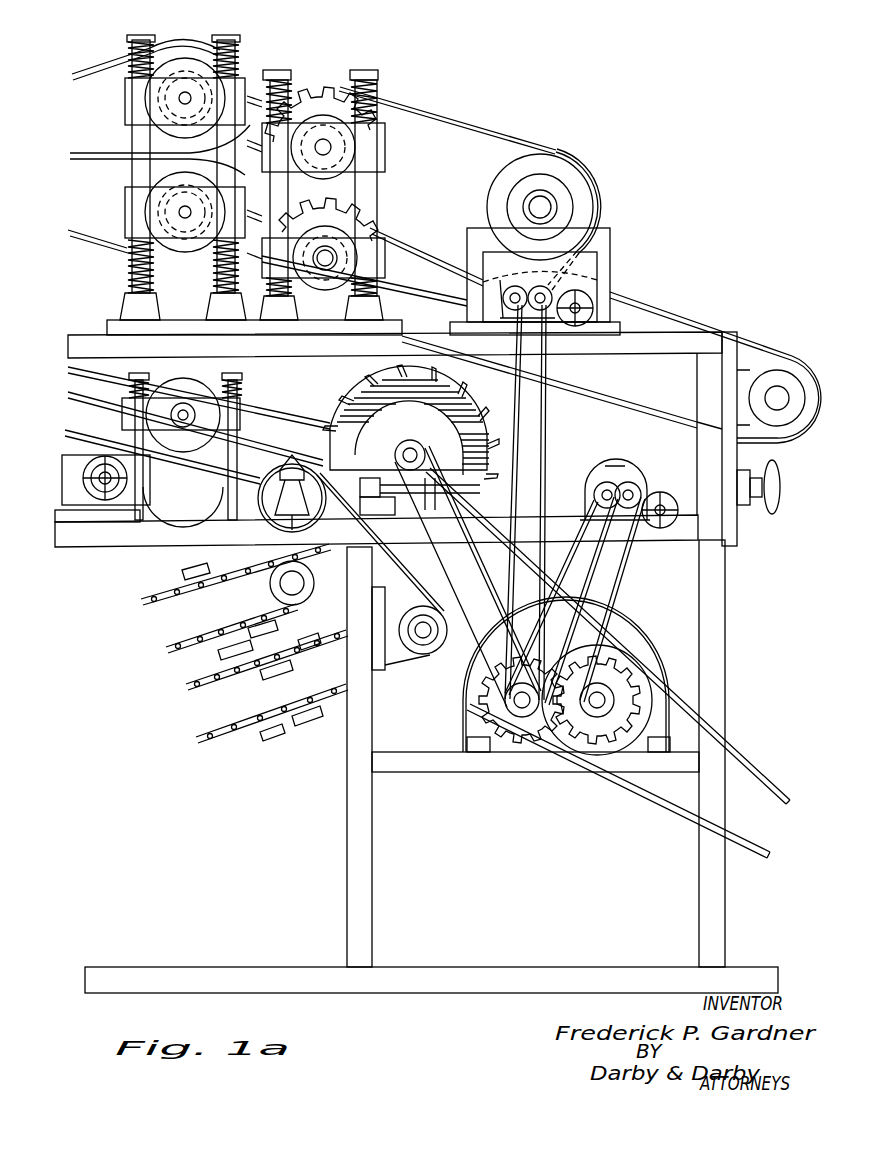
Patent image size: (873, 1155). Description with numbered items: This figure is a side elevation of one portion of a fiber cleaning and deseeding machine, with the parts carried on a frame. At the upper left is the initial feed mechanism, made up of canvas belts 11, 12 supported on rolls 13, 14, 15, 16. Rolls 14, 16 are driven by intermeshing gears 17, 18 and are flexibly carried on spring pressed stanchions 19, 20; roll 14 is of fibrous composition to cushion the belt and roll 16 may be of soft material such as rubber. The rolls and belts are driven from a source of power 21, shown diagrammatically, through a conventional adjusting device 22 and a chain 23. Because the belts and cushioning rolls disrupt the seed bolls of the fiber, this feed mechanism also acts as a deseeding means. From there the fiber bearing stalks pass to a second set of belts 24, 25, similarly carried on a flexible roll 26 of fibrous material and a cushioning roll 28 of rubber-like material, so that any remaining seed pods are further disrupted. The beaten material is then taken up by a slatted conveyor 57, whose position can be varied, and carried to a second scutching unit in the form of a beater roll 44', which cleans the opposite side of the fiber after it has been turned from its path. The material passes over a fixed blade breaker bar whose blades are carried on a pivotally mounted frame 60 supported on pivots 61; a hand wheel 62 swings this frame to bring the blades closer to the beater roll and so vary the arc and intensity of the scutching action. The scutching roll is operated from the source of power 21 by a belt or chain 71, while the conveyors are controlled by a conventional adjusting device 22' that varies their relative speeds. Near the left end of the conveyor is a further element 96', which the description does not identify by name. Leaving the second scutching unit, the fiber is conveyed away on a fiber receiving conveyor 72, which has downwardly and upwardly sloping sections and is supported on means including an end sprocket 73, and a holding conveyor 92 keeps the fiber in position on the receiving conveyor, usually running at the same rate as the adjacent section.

The belt 11 is at (518, 146).
The belt 12 is at (697, 316).
The roll 13 is at (497, 185).
The roll 14 is at (306, 82).
The roll 15 is at (755, 360).
The roll 16 is at (288, 312).
The gear 17 is at (352, 190).
The gear 18 is at (372, 230).
The spring pressed stanchion 19 is at (277, 74).
The spring pressed stanchion 20 is at (366, 72).
The source of power 21 is at (640, 630).
The adjusting device 22 is at (554, 277).
The adjusting device 22' is at (629, 487).
The chain 23 is at (440, 300).
The belt 24 is at (103, 222).
The belt 25 is at (90, 78).
The flexible roll 26 is at (150, 155).
The cushioning roll 28 is at (142, 185).
The beater roll 44' is at (410, 421).
The conveyor 57 is at (187, 429).
The pivotally mounted frame 60 is at (320, 486).
The pivot 61 is at (292, 455).
The hand wheel 62 is at (320, 500).
The belt or chain 71 is at (465, 566).
The fiber receiving conveyor 72 is at (243, 672).
The end sprocket 73 is at (409, 643).
The holding conveyor 92 is at (210, 632).
The motor 96' is at (106, 458).